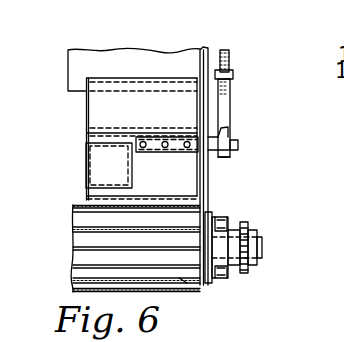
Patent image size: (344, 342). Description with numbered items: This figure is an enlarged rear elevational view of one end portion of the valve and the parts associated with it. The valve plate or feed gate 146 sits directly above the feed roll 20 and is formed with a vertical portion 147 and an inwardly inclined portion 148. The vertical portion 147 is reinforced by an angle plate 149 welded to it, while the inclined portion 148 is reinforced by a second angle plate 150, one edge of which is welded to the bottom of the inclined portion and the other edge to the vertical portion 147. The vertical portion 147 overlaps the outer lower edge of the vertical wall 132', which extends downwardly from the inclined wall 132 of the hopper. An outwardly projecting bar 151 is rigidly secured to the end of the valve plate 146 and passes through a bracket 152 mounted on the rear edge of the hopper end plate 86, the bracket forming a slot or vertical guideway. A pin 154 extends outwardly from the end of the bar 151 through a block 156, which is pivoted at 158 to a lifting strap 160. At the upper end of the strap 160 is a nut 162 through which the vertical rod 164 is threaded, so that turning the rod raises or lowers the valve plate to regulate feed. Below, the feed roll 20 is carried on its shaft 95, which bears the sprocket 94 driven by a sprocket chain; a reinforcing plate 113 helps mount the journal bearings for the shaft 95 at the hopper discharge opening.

The vertical wall 132' is at (134, 51).
The inclined wall 132 is at (134, 51).
The valve plate 146 is at (81, 167).
The angle plate 149 is at (98, 100).
The vertical portion 147 is at (97, 137).
The angle plate 150 is at (100, 155).
The outwardly projecting bar 151 is at (173, 149).
The inwardly inclined portion 148 is at (189, 181).
The hopper end plate 86 is at (205, 68).
The bracket 152 is at (207, 103).
The vertical rod 164 is at (229, 53).
The nut 162 is at (234, 72).
The lifting strap 160 is at (225, 108).
The pivot 158 is at (227, 133).
The pin 154 is at (237, 145).
The block 156 is at (226, 153).
The feed roll 20 is at (204, 281).
The reinforcing plate 113 is at (217, 286).
The sprocket 94 is at (250, 270).
The shaft 95 is at (260, 249).